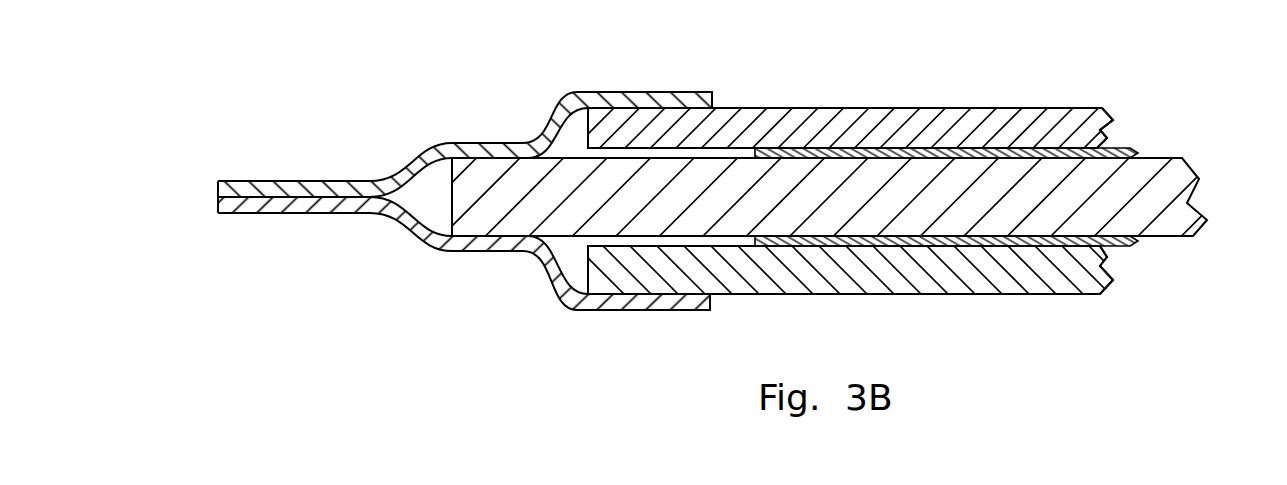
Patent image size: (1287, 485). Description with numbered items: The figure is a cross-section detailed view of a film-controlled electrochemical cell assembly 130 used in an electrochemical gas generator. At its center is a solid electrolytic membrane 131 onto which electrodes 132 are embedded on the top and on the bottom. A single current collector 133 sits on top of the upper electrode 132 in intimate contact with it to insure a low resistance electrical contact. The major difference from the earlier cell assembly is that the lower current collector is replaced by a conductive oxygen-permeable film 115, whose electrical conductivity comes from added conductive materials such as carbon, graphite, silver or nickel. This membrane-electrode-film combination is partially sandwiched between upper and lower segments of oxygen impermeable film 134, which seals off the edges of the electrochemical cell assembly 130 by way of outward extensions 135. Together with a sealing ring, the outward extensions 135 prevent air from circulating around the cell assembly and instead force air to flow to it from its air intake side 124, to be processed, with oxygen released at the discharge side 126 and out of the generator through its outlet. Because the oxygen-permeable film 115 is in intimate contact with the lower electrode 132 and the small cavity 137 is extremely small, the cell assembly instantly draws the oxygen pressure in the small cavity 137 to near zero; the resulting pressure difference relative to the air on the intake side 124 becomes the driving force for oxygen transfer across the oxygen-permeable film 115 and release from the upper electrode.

The electrochemical cell assembly 130 is at (235, 112).
The outward extensions 135 is at (358, 181).
The oxygen impermeable film 134 is at (572, 92).
The small cavity 137 is at (570, 255).
The solid electrolytic membrane 131 is at (1165, 193).
The discharge side 126 is at (893, 93).
The current collector 133 is at (1110, 118).
The air intake side 124 is at (953, 307).
The conductive oxygen-permeable film 115 is at (1113, 282).
The electrodes 132 is at (1128, 148).